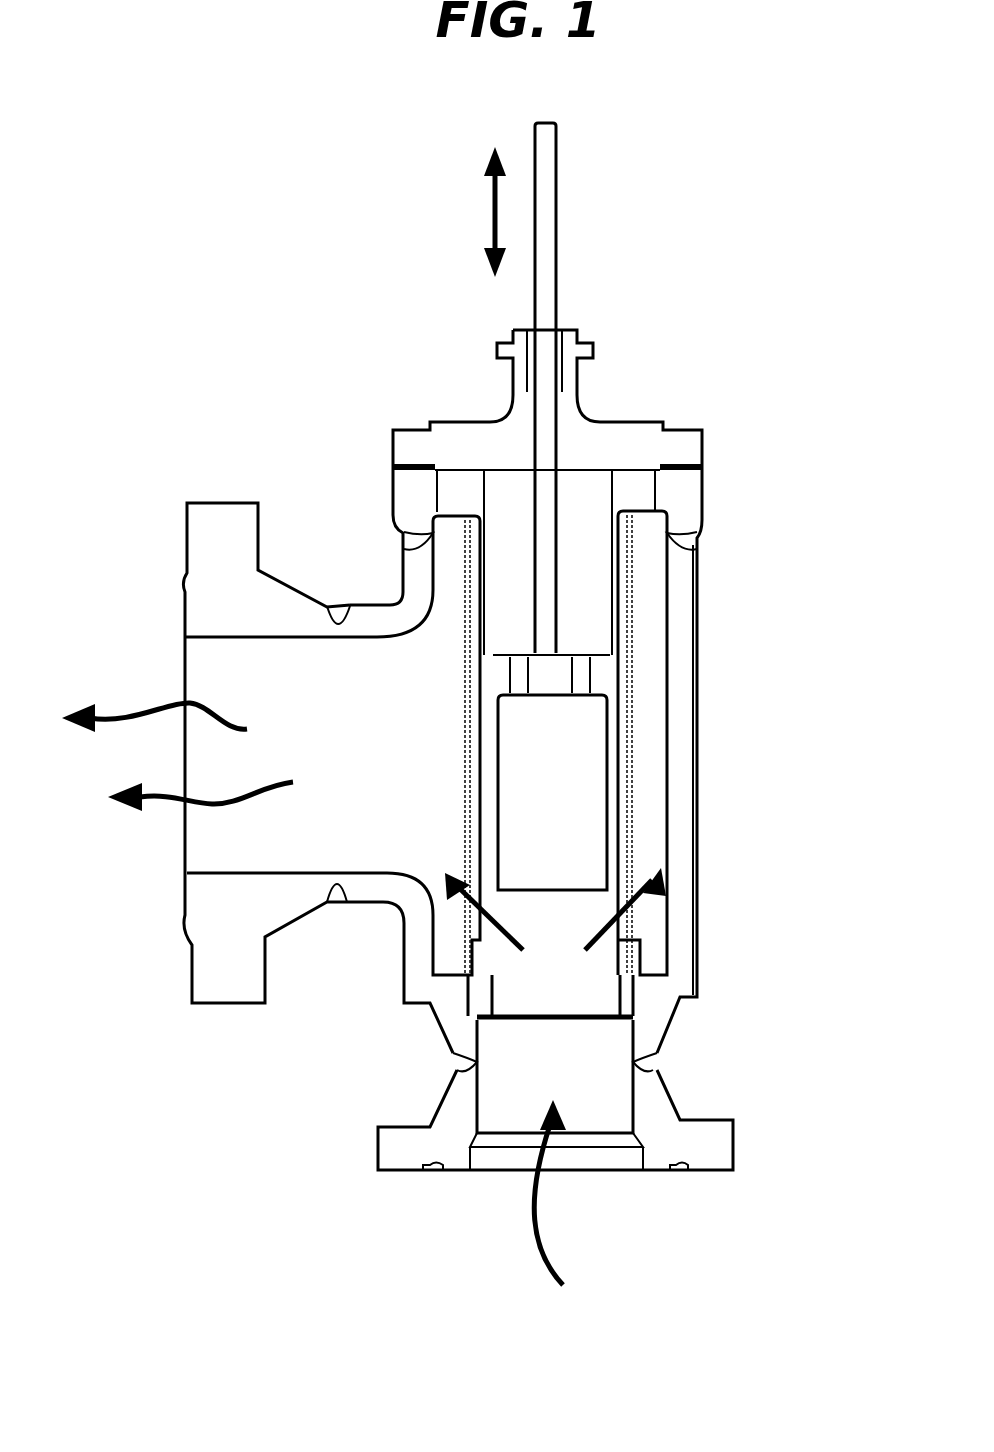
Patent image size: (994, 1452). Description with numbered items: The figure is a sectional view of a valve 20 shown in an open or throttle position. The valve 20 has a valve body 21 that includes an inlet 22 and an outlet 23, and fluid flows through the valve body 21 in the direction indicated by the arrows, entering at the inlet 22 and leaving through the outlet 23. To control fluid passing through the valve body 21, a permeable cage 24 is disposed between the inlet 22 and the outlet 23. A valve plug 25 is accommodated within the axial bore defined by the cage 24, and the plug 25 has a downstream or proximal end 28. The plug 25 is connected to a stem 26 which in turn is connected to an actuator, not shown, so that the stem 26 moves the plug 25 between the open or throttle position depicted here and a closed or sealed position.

The valve 20 is at (768, 376).
The valve body 21 is at (219, 492).
The inlet 22 is at (480, 1117).
The outlet 23 is at (203, 640).
The permeable cage 24 is at (472, 937).
The valve plug 25 is at (632, 703).
The stem 26 is at (557, 418).
The downstream or proximal end 28 is at (602, 653).